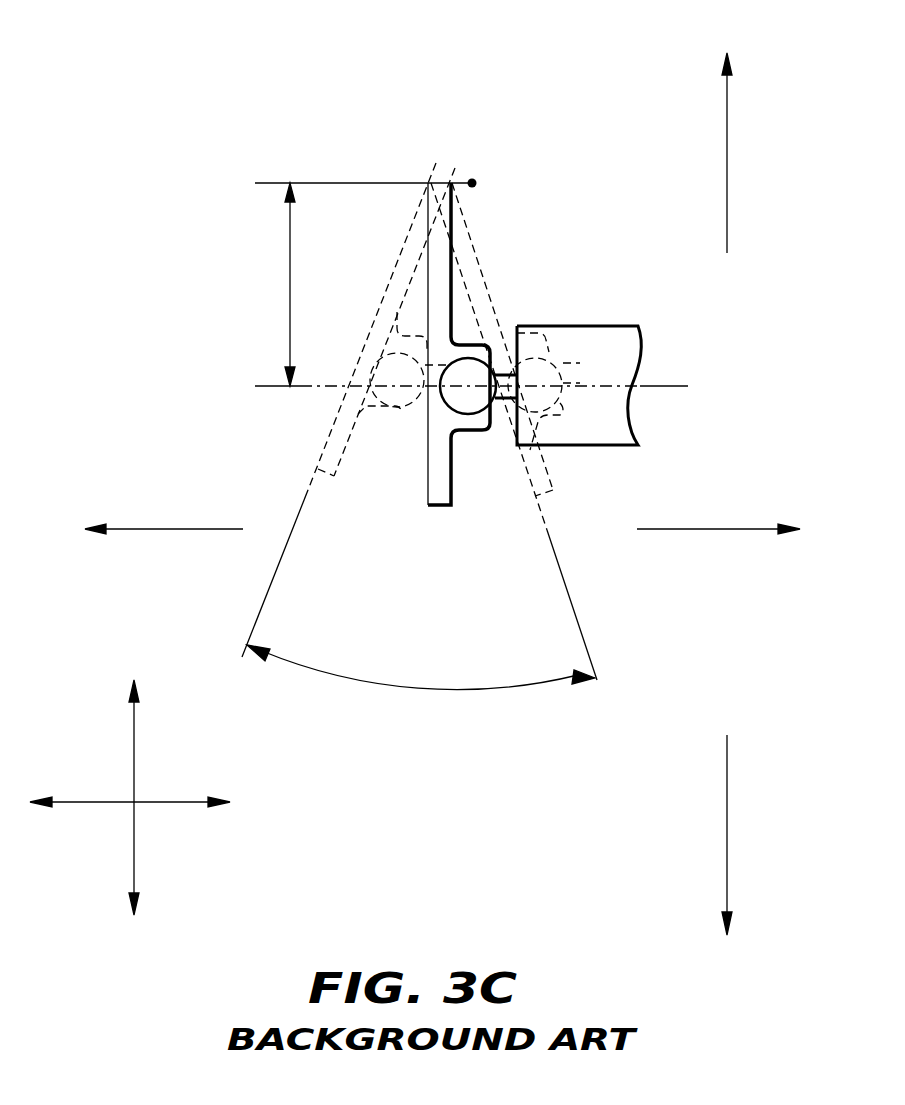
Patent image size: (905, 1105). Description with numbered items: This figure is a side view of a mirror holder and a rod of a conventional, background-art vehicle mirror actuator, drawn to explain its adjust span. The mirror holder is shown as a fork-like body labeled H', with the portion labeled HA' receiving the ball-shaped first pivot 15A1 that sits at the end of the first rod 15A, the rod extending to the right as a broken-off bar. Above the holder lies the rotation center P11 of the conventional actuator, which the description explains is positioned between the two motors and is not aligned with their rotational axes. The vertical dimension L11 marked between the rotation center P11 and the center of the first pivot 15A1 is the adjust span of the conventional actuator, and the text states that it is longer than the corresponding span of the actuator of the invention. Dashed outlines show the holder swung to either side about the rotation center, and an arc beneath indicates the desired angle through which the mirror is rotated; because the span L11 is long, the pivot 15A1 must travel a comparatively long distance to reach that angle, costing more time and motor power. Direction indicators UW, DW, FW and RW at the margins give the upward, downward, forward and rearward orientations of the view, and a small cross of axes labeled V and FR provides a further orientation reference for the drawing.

The first rod 15A is at (586, 332).
The first pivot 15A1 is at (467, 368).
The ball receiving arm of fork HA' is at (444, 421).
The fork / lever H' is at (431, 347).
The rotation center P11 is at (497, 184).
The adjust span L11 is at (271, 284).
The upward direction UW is at (733, 137).
The downward direction DW is at (734, 855).
The forward direction FW is at (740, 530).
The rearward direction RW is at (147, 530).
The vertical axis V is at (135, 730).
The front-rear axis FR is at (77, 803).